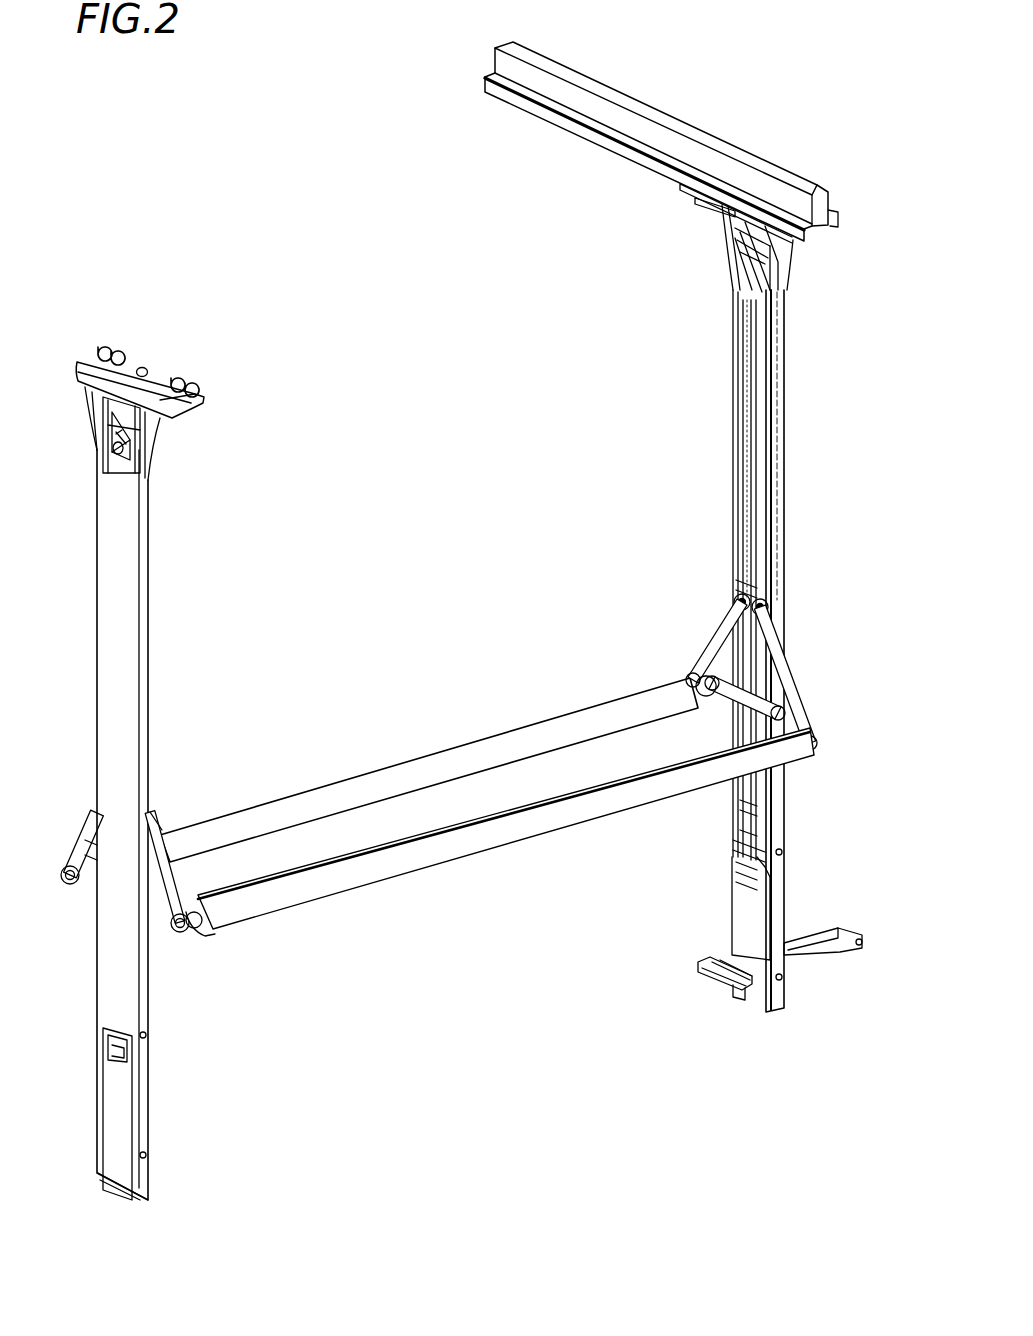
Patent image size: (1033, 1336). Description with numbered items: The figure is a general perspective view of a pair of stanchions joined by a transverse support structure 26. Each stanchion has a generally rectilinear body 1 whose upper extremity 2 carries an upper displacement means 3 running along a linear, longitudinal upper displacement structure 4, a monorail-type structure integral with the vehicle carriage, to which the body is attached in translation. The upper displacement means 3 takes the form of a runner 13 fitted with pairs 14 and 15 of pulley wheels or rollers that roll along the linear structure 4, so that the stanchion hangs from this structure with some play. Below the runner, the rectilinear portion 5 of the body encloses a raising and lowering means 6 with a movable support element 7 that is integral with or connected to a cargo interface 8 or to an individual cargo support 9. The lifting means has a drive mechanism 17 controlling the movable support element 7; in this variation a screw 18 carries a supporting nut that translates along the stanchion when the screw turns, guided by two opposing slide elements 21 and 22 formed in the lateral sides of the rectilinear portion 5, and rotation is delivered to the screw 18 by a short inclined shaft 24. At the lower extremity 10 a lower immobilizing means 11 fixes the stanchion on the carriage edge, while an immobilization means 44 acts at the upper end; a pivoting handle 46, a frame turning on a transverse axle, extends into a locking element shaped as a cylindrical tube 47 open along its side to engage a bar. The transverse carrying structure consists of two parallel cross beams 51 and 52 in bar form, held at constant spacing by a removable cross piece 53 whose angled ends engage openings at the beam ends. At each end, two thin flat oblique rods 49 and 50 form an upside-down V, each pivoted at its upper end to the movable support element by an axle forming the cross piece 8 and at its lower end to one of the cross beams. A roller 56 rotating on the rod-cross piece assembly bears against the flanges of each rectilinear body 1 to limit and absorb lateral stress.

The rectilinear body 1 is at (465, 738).
The upper extremity 2 is at (688, 212).
The upper displacement means 3 is at (152, 355).
The upper displacement structure 4 is at (678, 100).
The rectilinear portion 5 is at (782, 522).
The raising and lowering means 6 is at (718, 582).
The movable support element 7 is at (760, 607).
The cargo interface 8 is at (740, 605).
The individual cargo support 9 is at (795, 680).
The lower extremity 10 is at (715, 915).
The lower immobilizing means 11 is at (805, 905).
The runner 13 is at (160, 375).
The pair of pulley wheels or rollers 14 is at (115, 335).
The pair of pulley wheels or rollers 15 is at (207, 397).
The drive mechanism 17 is at (712, 265).
The screw 18 is at (760, 465).
The slide element 21 is at (780, 407).
The slide element 22 is at (737, 398).
The inclined shaft 24 is at (128, 430).
The transverse support structure 26 is at (300, 920).
The immobilization means 44 is at (795, 985).
The pivoting handle 46 is at (120, 1140).
The cylindrical tube 47 is at (700, 975).
The oblique rod 49 is at (170, 915).
The oblique rod 50 is at (80, 850).
The cross beam 51 is at (460, 877).
The cross beam 52 is at (486, 723).
The removable cross piece 53 is at (188, 882).
The roller 56 is at (735, 723).